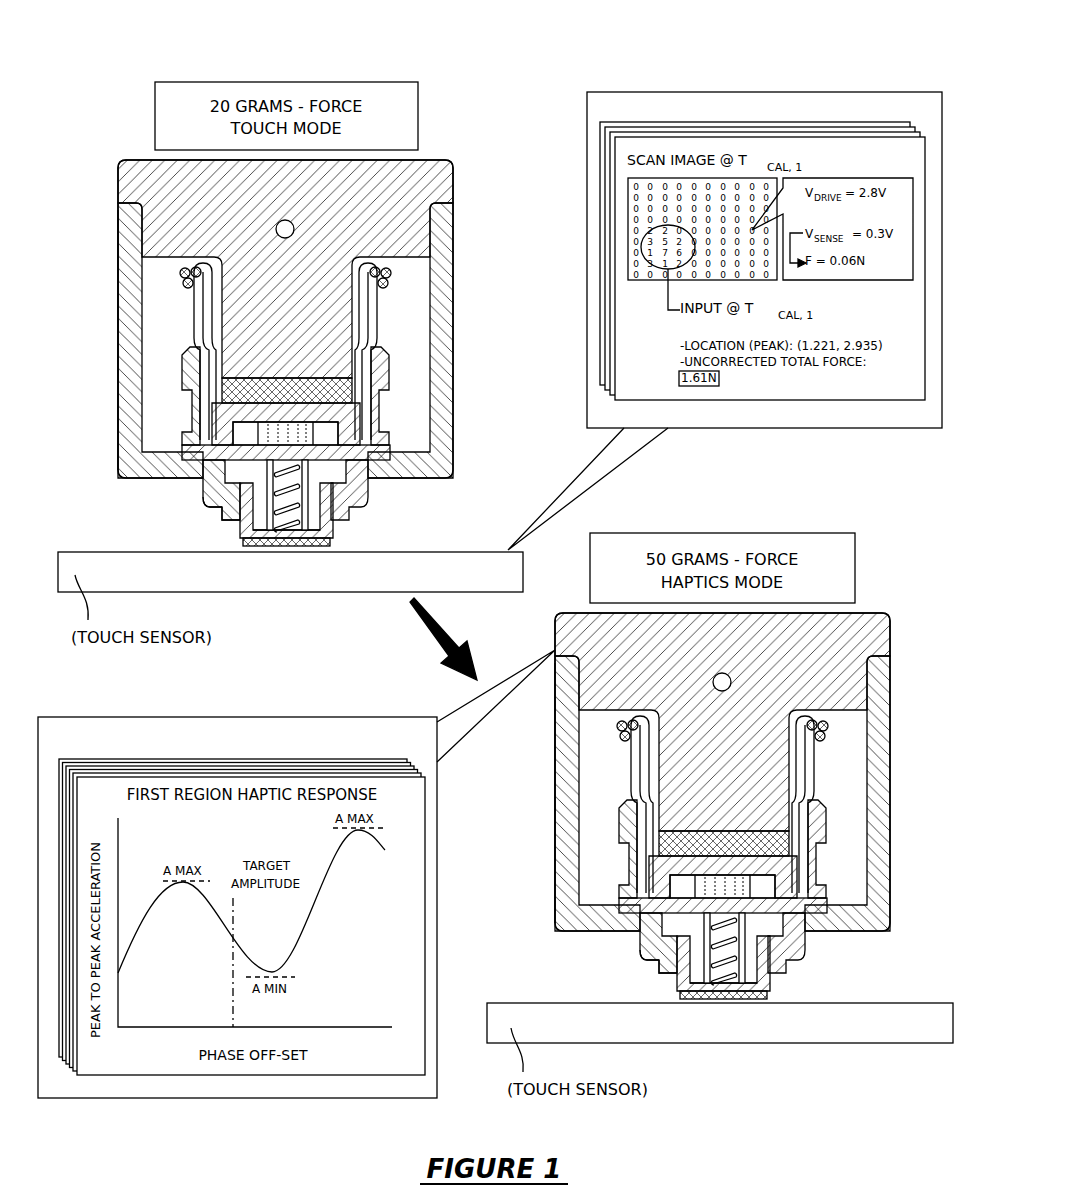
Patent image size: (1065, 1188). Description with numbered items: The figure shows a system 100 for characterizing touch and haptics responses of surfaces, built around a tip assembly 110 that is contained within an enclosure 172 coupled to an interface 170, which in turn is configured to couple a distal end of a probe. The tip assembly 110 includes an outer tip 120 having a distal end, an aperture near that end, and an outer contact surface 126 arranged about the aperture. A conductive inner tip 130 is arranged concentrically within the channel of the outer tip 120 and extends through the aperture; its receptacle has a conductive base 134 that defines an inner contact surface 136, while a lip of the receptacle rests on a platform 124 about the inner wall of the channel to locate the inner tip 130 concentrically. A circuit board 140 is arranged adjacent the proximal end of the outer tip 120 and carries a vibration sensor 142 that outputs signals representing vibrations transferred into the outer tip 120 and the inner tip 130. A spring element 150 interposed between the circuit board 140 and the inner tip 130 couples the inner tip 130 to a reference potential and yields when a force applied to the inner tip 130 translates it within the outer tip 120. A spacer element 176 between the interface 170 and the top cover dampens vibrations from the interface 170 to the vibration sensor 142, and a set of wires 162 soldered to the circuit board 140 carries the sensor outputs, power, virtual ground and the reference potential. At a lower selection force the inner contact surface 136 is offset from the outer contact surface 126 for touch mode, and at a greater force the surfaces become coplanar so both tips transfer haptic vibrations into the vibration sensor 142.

The system 100 is at (142, 47).
The tip assembly 110 is at (118, 182).
The outer tip 120 is at (207, 494).
The platform 124 is at (220, 513).
The outer contact surface 126 is at (232, 525).
The conductive inner tip 130 is at (327, 506).
The base 134 is at (345, 532).
The inner contact surface 136 is at (333, 542).
The circuit board 140 is at (200, 452).
The vibration sensor 142 is at (313, 437).
The spring element 150 is at (300, 478).
The set of wires 162 is at (196, 300).
The interface 170 is at (385, 212).
The enclosure 172 is at (118, 350).
The spacer element 176 is at (342, 393).